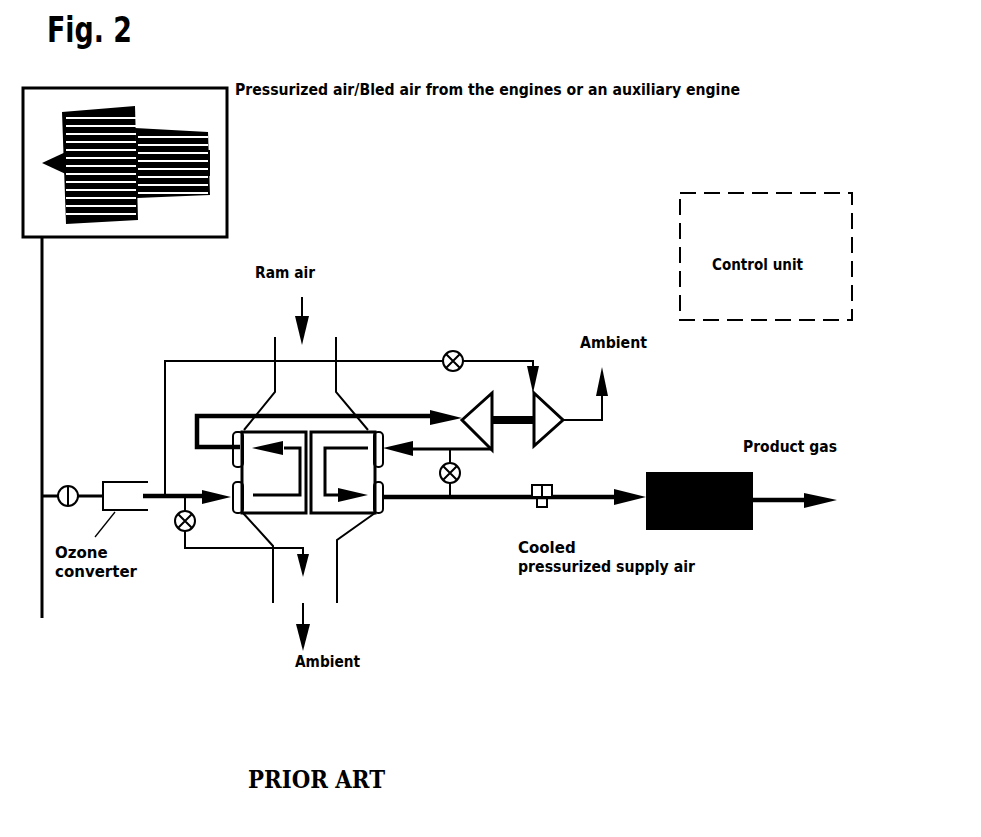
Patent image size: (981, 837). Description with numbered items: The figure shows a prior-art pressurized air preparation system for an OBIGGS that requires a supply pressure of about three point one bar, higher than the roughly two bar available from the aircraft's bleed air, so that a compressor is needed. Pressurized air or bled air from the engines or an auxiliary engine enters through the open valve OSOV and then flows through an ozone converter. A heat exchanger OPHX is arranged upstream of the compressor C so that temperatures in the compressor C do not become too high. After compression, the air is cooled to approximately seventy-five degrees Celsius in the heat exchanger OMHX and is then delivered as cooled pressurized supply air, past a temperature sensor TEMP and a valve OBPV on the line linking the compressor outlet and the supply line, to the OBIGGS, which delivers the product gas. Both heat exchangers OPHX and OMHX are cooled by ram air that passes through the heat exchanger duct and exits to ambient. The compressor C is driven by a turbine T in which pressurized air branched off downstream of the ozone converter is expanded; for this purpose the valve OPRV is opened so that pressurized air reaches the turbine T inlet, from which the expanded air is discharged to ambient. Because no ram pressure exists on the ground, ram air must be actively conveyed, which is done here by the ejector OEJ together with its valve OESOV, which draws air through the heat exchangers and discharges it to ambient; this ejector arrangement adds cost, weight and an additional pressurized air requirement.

The valve OSOV is at (67, 475).
The heat exchanger OPHX is at (246, 441).
The heat exchanger OMHX is at (365, 441).
The valve OPRV is at (440, 346).
The bypass valve OBPV is at (445, 489).
The ejector OEJ is at (311, 558).
The ejector shut-off valve OESOV is at (192, 555).
The temperature sensor TEMP is at (572, 478).
The compressor C is at (477, 421).
The turbine T is at (548, 419).
The OBIGGS system OBIGGS is at (699, 501).